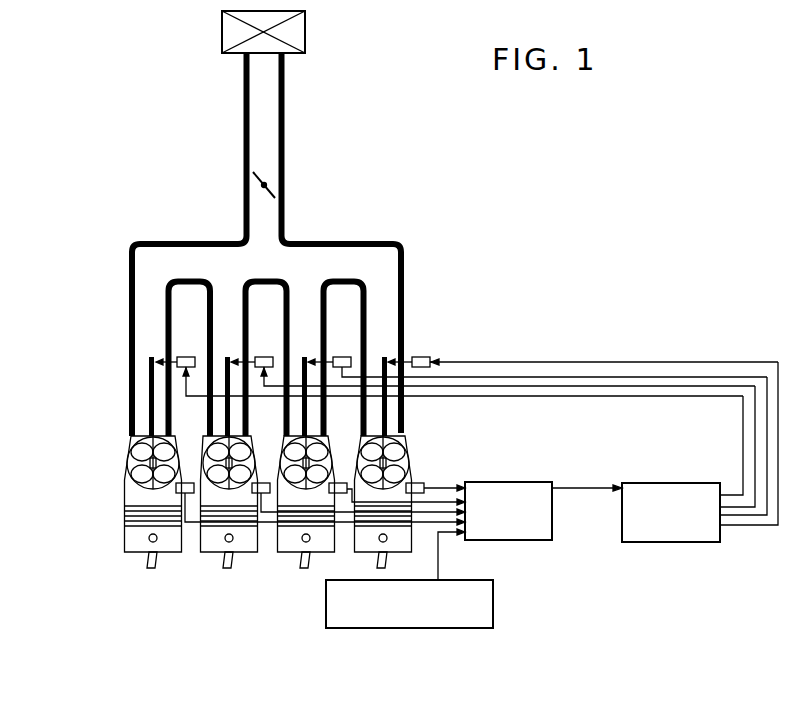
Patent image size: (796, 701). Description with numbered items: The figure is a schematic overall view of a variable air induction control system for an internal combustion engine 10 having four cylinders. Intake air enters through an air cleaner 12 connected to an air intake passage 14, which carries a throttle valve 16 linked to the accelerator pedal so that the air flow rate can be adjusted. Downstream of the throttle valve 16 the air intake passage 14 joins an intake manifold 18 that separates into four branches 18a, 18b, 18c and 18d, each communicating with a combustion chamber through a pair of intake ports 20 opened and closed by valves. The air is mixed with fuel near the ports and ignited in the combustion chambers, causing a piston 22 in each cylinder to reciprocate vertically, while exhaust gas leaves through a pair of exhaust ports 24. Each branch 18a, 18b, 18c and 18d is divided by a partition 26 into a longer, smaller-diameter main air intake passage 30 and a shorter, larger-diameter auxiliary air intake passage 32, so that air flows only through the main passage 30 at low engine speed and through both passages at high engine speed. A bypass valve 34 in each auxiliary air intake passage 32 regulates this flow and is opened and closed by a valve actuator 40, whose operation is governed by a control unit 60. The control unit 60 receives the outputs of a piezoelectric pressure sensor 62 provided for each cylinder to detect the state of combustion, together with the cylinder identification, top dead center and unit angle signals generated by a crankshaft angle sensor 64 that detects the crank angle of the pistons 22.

The internal combustion engine 10 is at (243, 513).
The air cleaner 12 is at (222, 47).
The air intake passage 14 is at (243, 112).
The throttle valve 16 is at (257, 190).
The intake manifold 18 is at (186, 240).
The branch 18a is at (362, 330).
The branch 18b is at (285, 330).
The branch 18c is at (207, 330).
The branch 18d is at (128, 282).
The intake port 20 is at (142, 455).
The piston 22 is at (124, 543).
The exhaust port 24 is at (127, 480).
The partition 26 is at (150, 393).
The main air intake passage 30 is at (376, 390).
The auxiliary air intake passage 32 is at (392, 413).
The bypass valve 34 is at (157, 362).
The valve actuator 40 is at (668, 483).
The control unit 60 is at (510, 541).
The piezoelectric pressure sensor 62 is at (185, 522).
The crankshaft angle sensor 64 is at (432, 628).